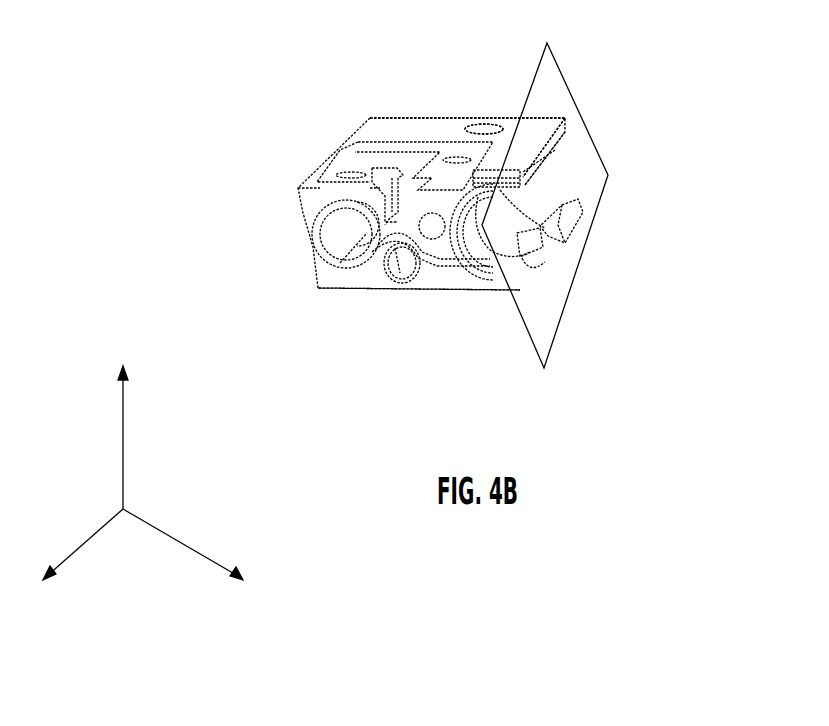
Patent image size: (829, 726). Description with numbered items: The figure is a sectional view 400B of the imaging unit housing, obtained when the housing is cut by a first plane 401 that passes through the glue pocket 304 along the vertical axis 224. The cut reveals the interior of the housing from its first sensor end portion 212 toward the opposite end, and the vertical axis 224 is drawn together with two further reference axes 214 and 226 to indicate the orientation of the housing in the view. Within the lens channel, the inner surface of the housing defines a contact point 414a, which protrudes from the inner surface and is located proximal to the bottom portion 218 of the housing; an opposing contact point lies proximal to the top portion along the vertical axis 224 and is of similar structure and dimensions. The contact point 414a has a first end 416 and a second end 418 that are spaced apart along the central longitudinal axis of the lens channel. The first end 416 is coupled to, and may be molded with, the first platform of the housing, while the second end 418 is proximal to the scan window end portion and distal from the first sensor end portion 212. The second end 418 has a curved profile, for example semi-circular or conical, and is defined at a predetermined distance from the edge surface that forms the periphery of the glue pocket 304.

The sectional view 400B is at (258, 81).
The first sensor end portion 212 is at (388, 118).
The glue pocket 304 is at (466, 140).
The first plane 401 is at (545, 75).
The first end 416 is at (569, 173).
The contact point 414a is at (548, 233).
The second end 418 is at (528, 253).
The bottom portion 218 is at (410, 288).
The vertical axis 224 is at (123, 449).
The lateral axis 214 is at (107, 527).
The longitudinal axis 226 is at (210, 553).